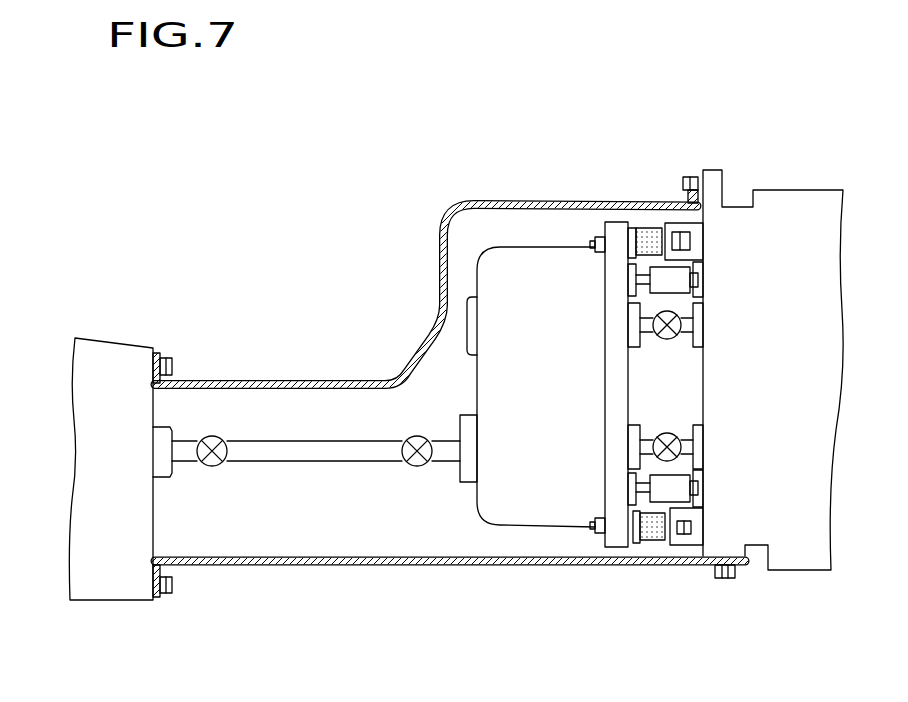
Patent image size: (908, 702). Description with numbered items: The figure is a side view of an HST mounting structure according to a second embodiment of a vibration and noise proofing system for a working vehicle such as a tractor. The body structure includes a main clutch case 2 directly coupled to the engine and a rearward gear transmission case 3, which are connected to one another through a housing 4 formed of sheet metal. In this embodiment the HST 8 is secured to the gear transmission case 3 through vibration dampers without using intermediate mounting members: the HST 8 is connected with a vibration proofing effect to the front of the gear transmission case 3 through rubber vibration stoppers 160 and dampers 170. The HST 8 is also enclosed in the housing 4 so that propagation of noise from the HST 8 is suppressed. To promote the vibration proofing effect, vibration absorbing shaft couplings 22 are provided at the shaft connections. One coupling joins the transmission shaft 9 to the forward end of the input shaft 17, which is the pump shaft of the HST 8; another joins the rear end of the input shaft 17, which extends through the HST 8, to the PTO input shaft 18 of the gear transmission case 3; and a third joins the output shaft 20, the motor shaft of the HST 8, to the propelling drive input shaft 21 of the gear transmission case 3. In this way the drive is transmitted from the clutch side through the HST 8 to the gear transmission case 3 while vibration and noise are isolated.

The main clutch case 2 is at (137, 347).
The gear transmission case 3 is at (787, 190).
The housing 4 is at (438, 262).
The HST 8 is at (471, 374).
The transmission shaft 9 is at (293, 455).
The input shaft 17 is at (640, 447).
The PTO input shaft 18 is at (690, 443).
The output shaft 20 is at (645, 325).
The propelling drive input shaft 21 is at (690, 323).
The vibration absorbing shaft couplings 22 is at (405, 462).
The rubber vibration stoppers 160 is at (648, 228).
The dampers 170 is at (633, 280).